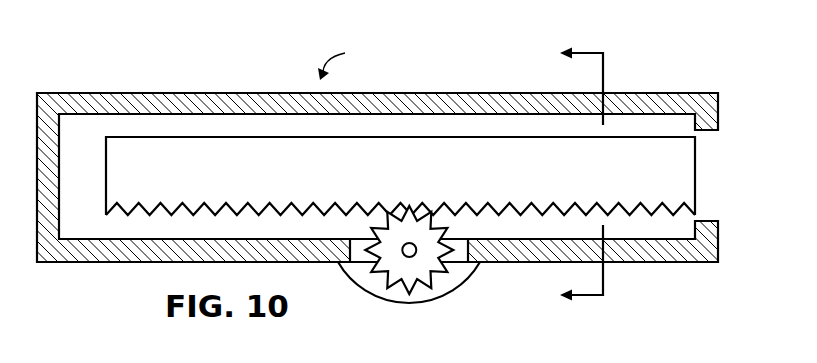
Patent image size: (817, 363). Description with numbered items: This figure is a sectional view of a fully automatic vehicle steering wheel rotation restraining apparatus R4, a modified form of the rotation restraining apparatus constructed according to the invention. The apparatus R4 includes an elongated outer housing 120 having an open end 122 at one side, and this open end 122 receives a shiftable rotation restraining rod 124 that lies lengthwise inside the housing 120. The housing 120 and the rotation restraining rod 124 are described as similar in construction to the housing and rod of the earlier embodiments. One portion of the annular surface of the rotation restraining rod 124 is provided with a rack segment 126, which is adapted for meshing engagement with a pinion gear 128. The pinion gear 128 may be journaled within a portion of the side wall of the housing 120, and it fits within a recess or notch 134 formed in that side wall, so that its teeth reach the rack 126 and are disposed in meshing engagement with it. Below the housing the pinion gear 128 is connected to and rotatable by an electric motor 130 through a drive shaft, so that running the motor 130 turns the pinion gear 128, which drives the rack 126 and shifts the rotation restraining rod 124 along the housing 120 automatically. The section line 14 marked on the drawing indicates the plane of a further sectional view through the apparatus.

The outer housing 120 is at (62, 93).
The open end 122 is at (710, 183).
The rotation restraining rod 124 is at (415, 137).
The rack segment 126 is at (165, 215).
The pinion gear 128 is at (410, 298).
The electric motor 130 is at (380, 300).
The recess or notch 134 is at (466, 252).
The section line 14- 14 is at (597, 175).
The fully automatic vehicle steering wheel rotation restraining apparatus R4 is at (349, 62).